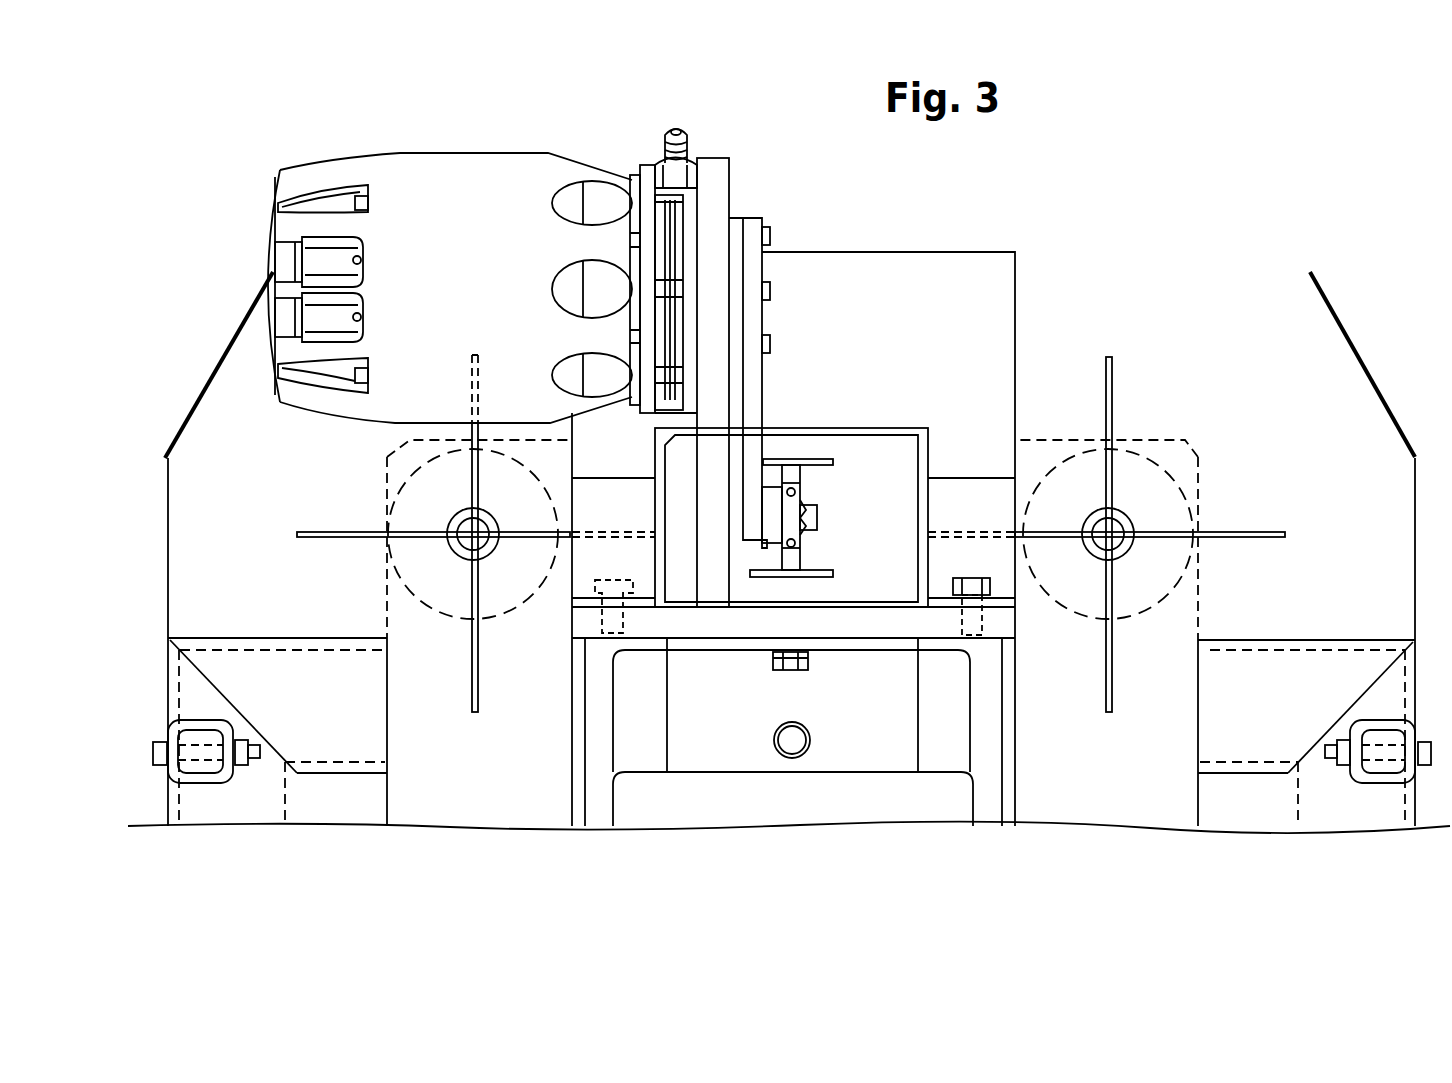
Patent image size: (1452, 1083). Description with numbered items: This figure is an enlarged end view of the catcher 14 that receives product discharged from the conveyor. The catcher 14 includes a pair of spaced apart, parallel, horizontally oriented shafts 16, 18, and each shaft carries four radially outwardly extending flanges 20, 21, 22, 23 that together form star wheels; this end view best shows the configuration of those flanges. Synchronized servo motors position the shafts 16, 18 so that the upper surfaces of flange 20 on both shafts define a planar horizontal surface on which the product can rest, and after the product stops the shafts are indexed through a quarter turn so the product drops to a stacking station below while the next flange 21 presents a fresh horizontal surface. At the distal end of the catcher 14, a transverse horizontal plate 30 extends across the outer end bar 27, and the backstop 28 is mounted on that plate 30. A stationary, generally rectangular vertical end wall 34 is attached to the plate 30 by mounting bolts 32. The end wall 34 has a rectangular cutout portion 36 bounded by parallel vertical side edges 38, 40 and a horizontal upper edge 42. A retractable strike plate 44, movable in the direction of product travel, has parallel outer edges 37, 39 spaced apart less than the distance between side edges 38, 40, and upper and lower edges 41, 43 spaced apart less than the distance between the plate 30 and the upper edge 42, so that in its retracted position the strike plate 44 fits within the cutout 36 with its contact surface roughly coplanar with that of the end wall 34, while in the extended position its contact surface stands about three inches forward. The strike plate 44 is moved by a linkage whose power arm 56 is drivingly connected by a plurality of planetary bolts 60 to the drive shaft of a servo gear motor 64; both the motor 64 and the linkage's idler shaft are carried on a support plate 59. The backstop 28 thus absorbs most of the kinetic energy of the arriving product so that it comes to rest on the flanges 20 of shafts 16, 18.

The catcher 14 is at (1236, 205).
The shaft 16 is at (1108, 548).
The shaft 18 is at (463, 543).
The flange 20 is at (537, 530).
The flange 21 is at (470, 377).
The flange 22 is at (300, 535).
The flange 23 is at (472, 683).
The outer end bar 27 is at (1243, 773).
The backstop 28 is at (442, 261).
The transverse horizontal plate 30 is at (585, 640).
The mounting bolts 32 is at (980, 625).
The stationary vertical end wall 34 is at (993, 251).
The rectangular cutout portion 36 is at (862, 434).
The outer edge 37 is at (662, 543).
The side edge 38 is at (678, 638).
The outer edge 39 is at (918, 530).
The side edge 40 is at (932, 478).
The upper edge 41 is at (832, 432).
The horizontal upper edge 42 is at (915, 500).
The lower edge 43 is at (878, 600).
The retractable strike plate 44 is at (935, 560).
The power arm 56 is at (765, 402).
The support plate 59 is at (712, 158).
The planetary bolts 60 is at (768, 233).
The servo gear motor 64 is at (368, 155).